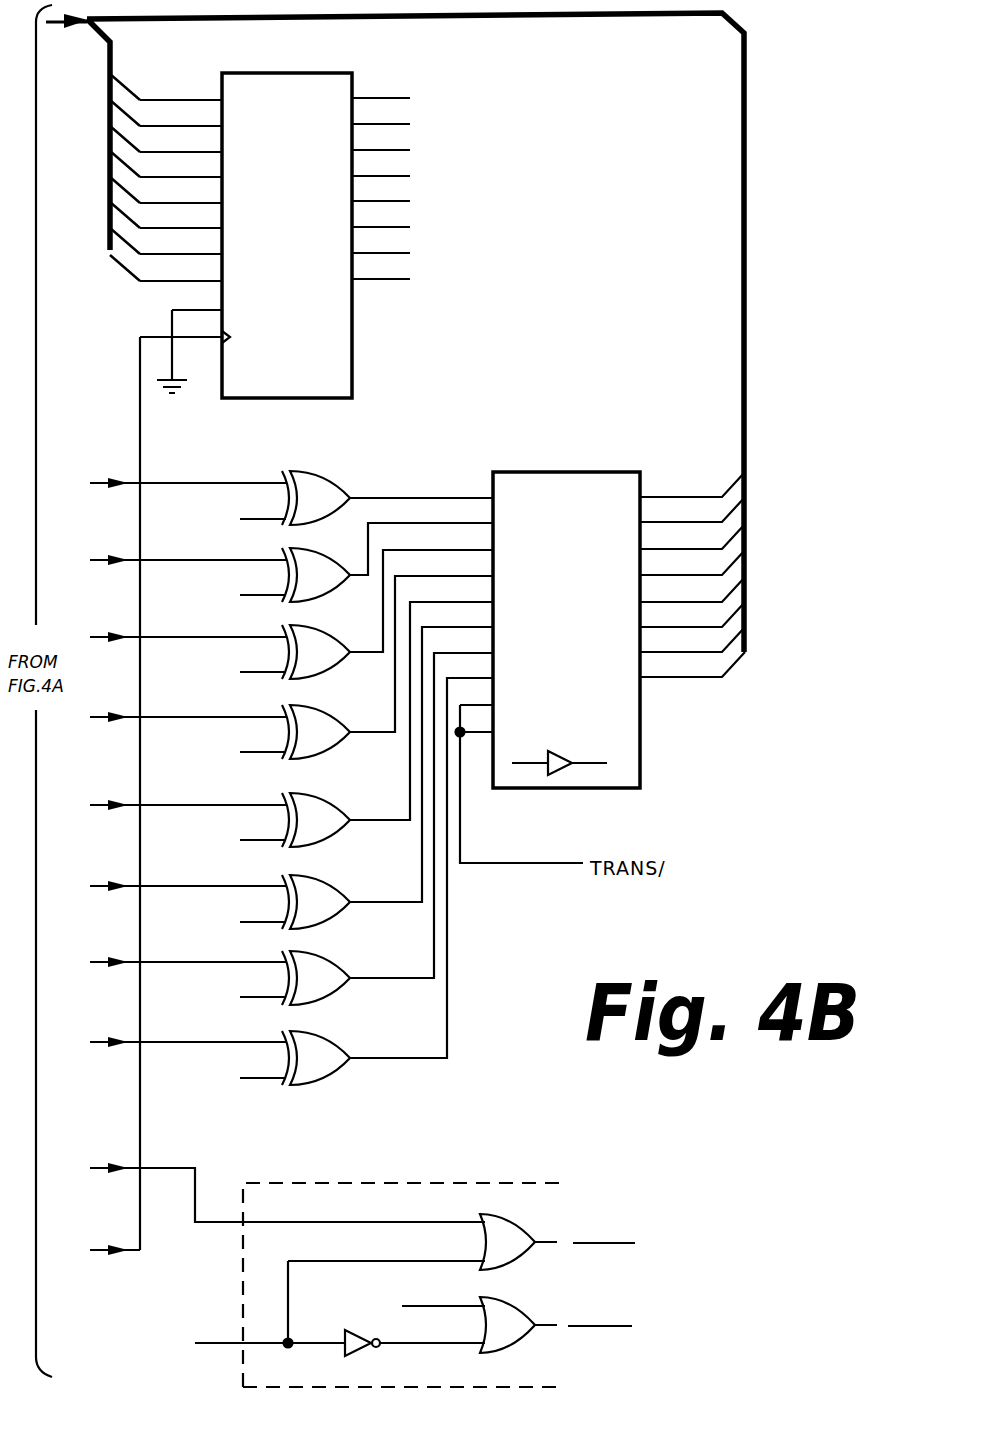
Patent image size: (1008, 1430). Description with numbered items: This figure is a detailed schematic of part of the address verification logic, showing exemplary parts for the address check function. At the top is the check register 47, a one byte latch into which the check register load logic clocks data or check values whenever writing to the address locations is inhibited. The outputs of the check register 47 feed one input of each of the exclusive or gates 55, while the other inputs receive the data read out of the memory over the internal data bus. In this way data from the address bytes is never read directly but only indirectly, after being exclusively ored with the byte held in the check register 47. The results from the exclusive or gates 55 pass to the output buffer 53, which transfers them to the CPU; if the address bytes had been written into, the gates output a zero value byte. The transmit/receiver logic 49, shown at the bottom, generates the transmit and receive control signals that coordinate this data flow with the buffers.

The check register 47 is at (352, 333).
The output buffer 53 is at (618, 472).
The exclusive or gates 55 is at (404, 463).
The transmit/receiver logic 49 is at (420, 1183).